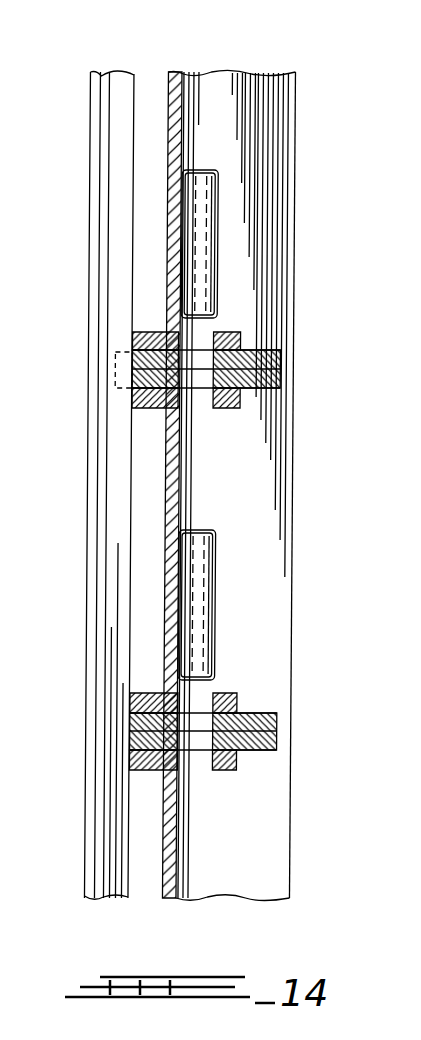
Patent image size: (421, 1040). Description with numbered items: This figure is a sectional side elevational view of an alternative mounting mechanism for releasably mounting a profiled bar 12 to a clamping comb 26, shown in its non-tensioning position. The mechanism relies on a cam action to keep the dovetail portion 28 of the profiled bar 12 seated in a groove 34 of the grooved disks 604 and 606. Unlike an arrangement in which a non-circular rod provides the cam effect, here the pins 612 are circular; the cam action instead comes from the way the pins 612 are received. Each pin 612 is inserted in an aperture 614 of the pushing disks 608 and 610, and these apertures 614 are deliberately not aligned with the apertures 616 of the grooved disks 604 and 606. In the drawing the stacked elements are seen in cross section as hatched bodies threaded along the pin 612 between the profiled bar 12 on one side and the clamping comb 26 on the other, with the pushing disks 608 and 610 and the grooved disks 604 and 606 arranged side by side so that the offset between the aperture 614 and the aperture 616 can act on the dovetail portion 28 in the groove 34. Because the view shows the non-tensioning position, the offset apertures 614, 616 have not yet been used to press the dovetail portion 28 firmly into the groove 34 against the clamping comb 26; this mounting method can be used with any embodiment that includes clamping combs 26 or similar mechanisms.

The profiled bar 12 is at (105, 163).
The dovetail portion 28 is at (120, 92).
The clamping comb 26 is at (270, 122).
The groove 34 is at (120, 352).
The grooved disk 604 is at (284, 365).
The grooved disk 606 is at (280, 387).
The pushing disk 608 is at (240, 337).
The pushing disk 610 is at (240, 403).
The pin 612 is at (200, 245).
The aperture of the pushing disk 614 is at (210, 333).
The aperture of the grooved disk 616 is at (212, 326).